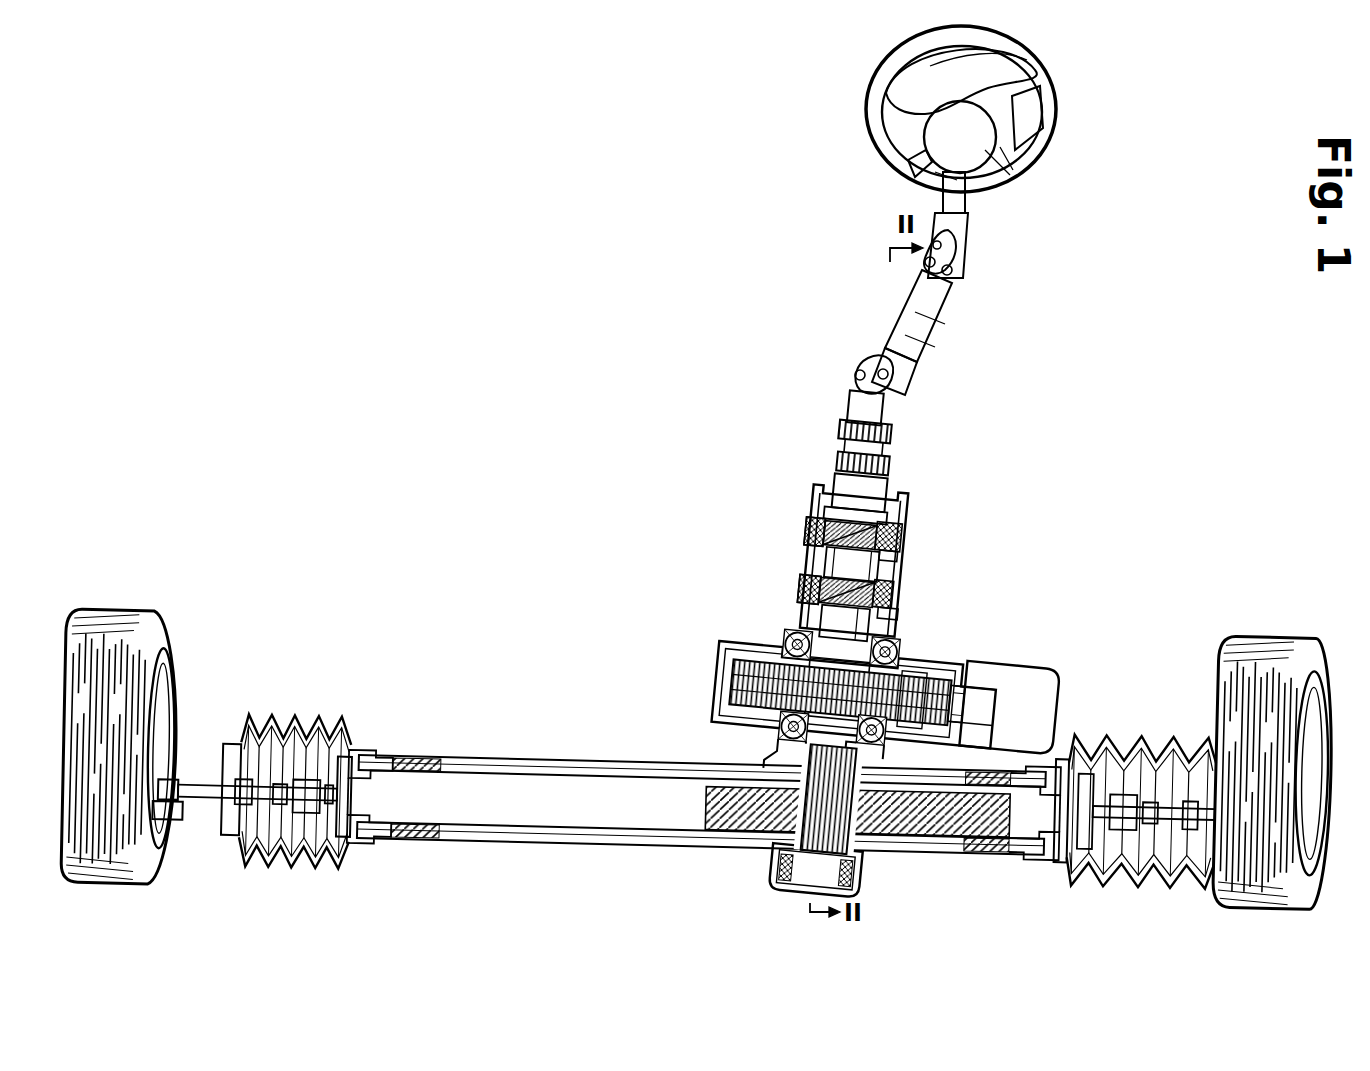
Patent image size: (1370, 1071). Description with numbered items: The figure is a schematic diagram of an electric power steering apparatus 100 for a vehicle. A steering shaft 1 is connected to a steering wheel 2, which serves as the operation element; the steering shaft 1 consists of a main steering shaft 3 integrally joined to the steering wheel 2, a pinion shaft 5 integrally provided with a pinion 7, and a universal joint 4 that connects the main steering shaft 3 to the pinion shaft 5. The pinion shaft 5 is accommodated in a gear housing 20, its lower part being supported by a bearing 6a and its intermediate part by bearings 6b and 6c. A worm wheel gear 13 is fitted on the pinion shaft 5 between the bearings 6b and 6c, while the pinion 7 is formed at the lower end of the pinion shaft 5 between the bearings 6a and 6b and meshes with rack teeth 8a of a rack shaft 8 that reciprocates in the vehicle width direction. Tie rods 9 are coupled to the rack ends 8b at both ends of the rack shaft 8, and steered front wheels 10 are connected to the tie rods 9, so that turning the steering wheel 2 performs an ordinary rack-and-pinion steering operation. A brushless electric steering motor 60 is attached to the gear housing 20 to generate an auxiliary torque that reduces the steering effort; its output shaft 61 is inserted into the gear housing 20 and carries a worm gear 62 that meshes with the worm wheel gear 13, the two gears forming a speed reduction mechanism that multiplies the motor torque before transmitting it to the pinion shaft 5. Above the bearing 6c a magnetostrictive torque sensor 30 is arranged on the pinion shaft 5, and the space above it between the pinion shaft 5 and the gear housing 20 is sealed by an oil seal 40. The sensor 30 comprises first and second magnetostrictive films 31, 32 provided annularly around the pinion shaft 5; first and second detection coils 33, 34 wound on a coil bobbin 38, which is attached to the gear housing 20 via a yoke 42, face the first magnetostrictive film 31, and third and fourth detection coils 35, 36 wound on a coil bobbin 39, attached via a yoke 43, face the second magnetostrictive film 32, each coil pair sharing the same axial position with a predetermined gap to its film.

The steering shaft 1 is at (906, 379).
The steering wheel 2 is at (1058, 122).
The main steering shaft 3 is at (967, 205).
The universal joint 4 is at (937, 328).
The pinion shaft 5 is at (892, 618).
The bearing 6a is at (862, 880).
The bearing 6b is at (771, 736).
The bearing 6c is at (786, 640).
The pinion 7 is at (872, 841).
The rack shaft 8 is at (508, 840).
The rack teeth 8a is at (722, 815).
The rack end 8b is at (346, 765).
The tie rod 9 is at (196, 785).
The steered front wheel 10 is at (108, 611).
The worm wheel gear 13 is at (752, 655).
The gear housing 20 is at (712, 678).
The magnetostrictive torque sensor 30 is at (906, 547).
The first magnetostrictive film 31 is at (870, 537).
The second magnetostrictive film 32 is at (901, 583).
The first detection coil 33 is at (814, 522).
The second detection coil 34 is at (815, 532).
The third detection coil 35 is at (806, 580).
The fourth detection coil 36 is at (809, 589).
The coil bobbin 38 is at (906, 557).
The coil bobbin 39 is at (903, 601).
The oil seal 40 is at (830, 483).
The yoke 42 is at (809, 548).
The yoke 43 is at (805, 607).
The electric steering motor 60 is at (1022, 652).
The output shaft 61 is at (979, 676).
The worm gear 62 is at (915, 674).
The electric power steering apparatus 100 is at (1038, 438).